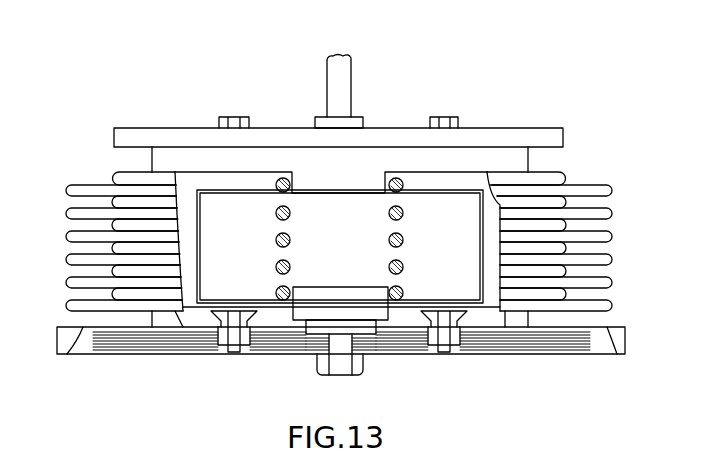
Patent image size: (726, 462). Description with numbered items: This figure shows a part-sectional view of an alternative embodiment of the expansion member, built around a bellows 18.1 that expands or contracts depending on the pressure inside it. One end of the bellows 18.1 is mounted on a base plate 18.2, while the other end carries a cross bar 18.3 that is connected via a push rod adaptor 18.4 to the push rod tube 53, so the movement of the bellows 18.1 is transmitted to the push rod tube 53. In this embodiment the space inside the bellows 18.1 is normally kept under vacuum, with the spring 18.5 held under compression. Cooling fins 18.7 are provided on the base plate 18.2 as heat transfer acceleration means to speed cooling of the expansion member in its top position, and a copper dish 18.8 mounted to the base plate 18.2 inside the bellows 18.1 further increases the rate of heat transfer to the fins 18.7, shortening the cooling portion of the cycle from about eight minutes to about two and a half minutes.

The push rod tube 53 is at (343, 73).
The bellows 18.1 is at (613, 234).
The base plate 18.2 is at (620, 338).
The cross bar 18.3 is at (553, 141).
The push rod adaptor 18.4 is at (315, 118).
The spring 18.5 is at (275, 268).
The cooling fins 18.7 is at (540, 355).
The copper dish 18.8 is at (480, 256).